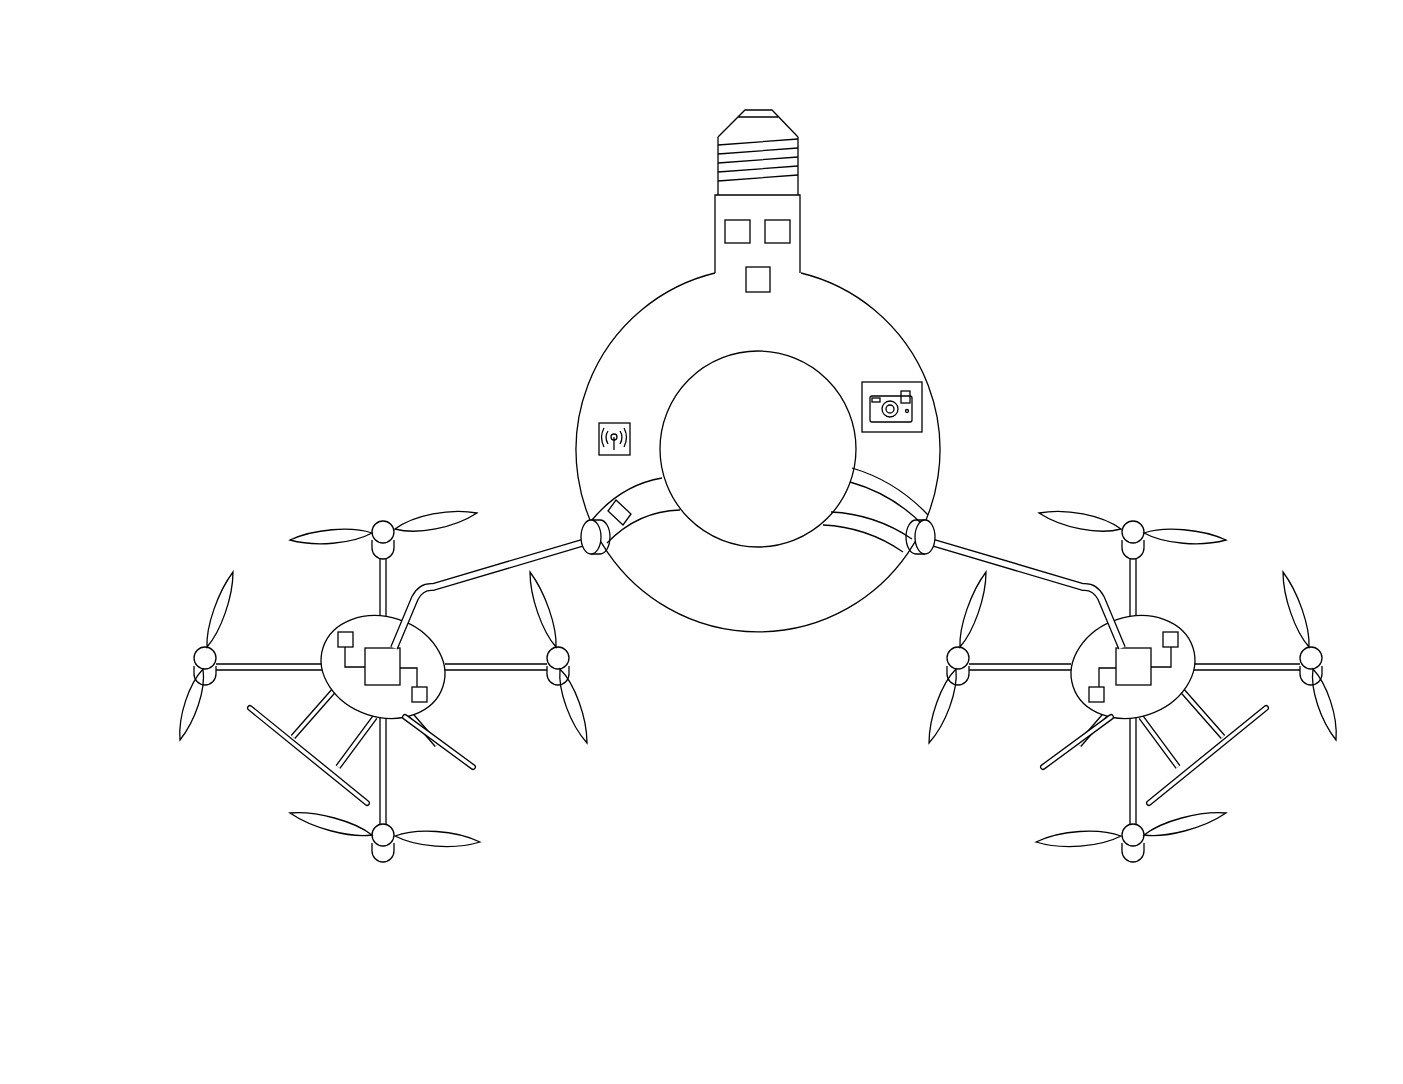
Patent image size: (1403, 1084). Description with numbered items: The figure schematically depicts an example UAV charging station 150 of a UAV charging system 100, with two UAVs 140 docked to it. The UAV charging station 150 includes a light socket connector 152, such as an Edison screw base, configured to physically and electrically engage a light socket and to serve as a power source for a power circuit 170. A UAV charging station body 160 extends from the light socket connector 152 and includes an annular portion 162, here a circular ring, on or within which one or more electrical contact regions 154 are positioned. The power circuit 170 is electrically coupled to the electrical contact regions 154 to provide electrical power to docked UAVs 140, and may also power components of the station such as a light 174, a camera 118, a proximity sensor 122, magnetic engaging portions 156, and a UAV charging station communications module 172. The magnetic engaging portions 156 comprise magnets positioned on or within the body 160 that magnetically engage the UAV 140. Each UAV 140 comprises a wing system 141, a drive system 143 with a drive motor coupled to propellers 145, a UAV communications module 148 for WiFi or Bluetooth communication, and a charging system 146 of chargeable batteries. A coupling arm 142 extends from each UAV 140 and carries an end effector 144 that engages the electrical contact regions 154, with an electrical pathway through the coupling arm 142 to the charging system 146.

The UAV charging system 100 is at (1118, 190).
The camera 118 is at (923, 410).
The proximity sensor 122 is at (598, 440).
The UAV 140 is at (400, 485).
The wing system 141 is at (233, 682).
The coupling arm 142 is at (537, 548).
The drive system 143 is at (428, 698).
The end effector 144 is at (600, 550).
The propeller 145 is at (330, 532).
The charging system 146 is at (370, 647).
The UAV communications module 148 is at (337, 638).
The UAV charging station 150 is at (883, 207).
The light socket connector 152 is at (782, 120).
The electrical contact region 154 is at (672, 493).
The magnetic engaging portion 156 is at (893, 484).
The UAV charging station body 160 is at (892, 282).
The annular portion 162 is at (872, 328).
The power circuit 170 is at (725, 232).
The UAV charging station communications module 172 is at (790, 232).
The light 174 is at (758, 293).